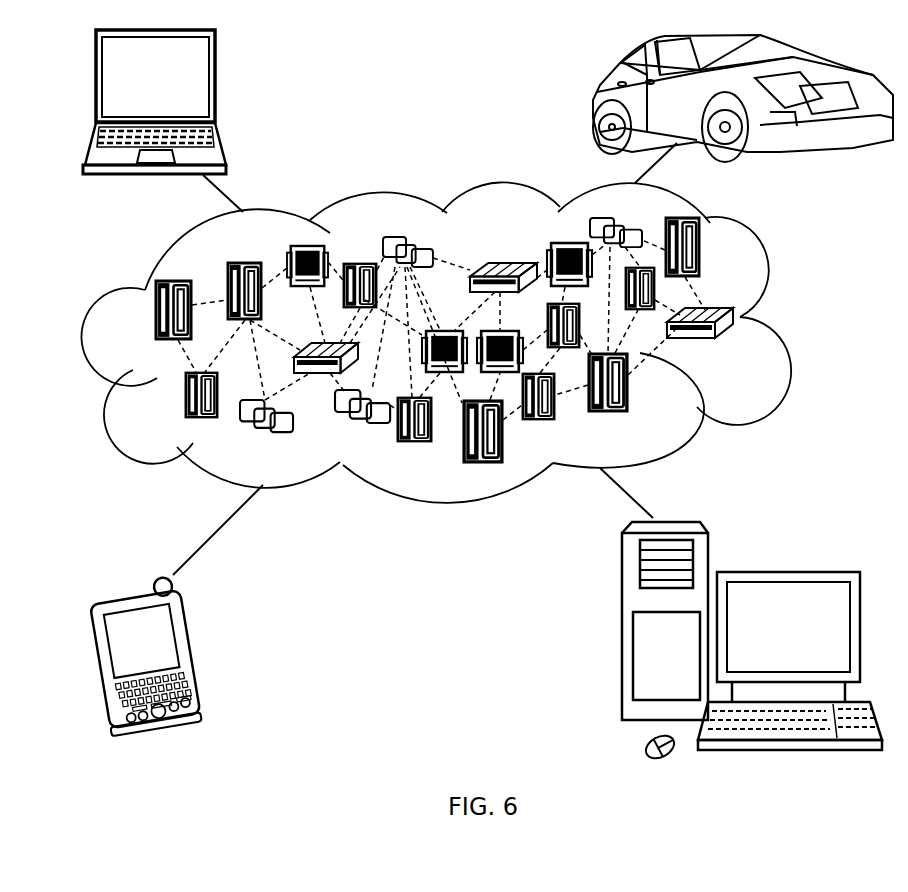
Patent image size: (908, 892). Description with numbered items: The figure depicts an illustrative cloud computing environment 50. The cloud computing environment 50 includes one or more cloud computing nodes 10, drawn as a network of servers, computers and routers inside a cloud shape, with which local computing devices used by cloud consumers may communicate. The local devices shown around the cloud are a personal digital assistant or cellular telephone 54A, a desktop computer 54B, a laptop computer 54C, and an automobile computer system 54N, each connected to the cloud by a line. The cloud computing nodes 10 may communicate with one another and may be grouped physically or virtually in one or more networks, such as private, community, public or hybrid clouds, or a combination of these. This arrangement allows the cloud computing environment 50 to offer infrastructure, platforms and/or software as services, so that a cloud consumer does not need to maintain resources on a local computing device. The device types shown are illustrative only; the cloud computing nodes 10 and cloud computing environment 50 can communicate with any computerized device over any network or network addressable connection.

The cloud computing node 10 is at (745, 350).
The cloud computing environment 50 is at (790, 326).
The personal digital assistant or cellular telephone 54A is at (206, 651).
The desktop computer 54B is at (785, 571).
The laptop computer 54C is at (217, 83).
The automobile computer system 54N is at (596, 98).